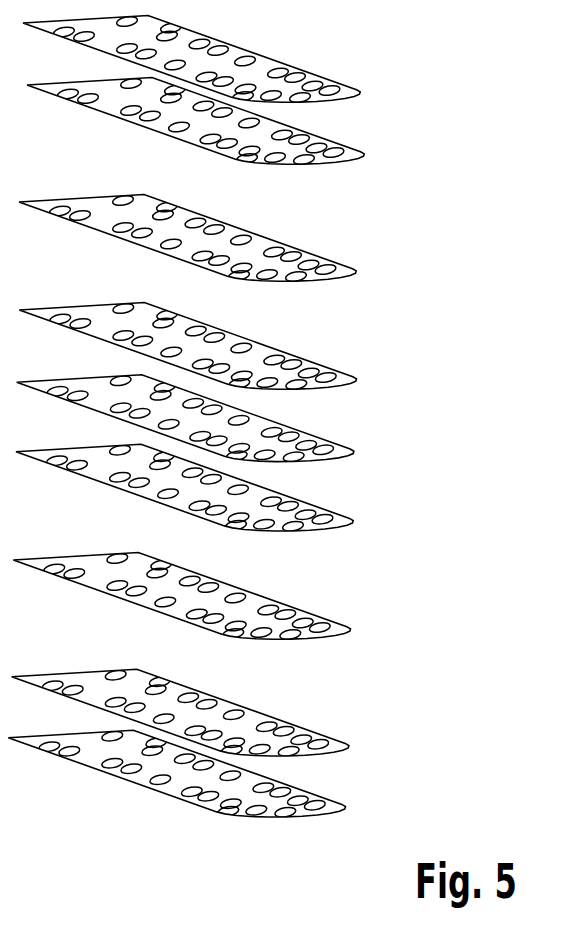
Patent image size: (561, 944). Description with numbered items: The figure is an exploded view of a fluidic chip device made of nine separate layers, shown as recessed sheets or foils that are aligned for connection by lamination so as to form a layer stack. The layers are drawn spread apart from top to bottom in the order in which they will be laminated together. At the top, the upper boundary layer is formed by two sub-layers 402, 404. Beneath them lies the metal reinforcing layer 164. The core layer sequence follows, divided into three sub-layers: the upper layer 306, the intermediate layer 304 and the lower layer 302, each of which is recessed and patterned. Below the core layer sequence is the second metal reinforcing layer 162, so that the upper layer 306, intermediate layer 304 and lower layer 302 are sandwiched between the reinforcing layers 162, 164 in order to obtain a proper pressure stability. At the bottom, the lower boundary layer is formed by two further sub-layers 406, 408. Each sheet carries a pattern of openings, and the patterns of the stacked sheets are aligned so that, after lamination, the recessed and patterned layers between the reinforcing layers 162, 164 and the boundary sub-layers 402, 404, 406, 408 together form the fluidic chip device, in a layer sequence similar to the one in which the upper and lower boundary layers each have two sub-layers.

The upper boundary sub-layer 402 is at (385, 68).
The upper boundary sub-layer 404 is at (387, 128).
The metal reinforcing layer 164 is at (379, 248).
The upper layer 306 is at (379, 355).
The intermediate layer 304 is at (376, 426).
The lower layer 302 is at (375, 496).
The metal reinforcing layer 162 is at (373, 604).
The lower boundary sub-layer 406 is at (371, 721).
The lower boundary sub-layer 408 is at (370, 783).